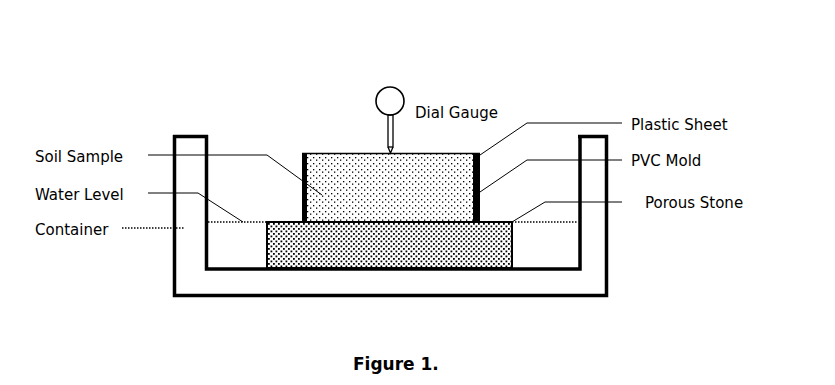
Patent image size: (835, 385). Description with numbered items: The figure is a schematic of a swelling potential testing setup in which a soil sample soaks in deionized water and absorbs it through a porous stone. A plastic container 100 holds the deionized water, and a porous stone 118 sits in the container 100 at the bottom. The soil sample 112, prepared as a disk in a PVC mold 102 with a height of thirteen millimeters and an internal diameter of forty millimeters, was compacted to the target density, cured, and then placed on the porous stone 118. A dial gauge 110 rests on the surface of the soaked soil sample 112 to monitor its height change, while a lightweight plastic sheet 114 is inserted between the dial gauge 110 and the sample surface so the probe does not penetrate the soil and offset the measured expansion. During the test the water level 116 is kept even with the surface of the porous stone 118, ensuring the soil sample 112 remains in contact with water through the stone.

The plastic container 100 is at (192, 263).
The PVC mold 102 is at (480, 175).
The dial gauge 110 is at (392, 88).
The soil sample 112 is at (322, 172).
The plastic sheet 114 is at (455, 153).
The water level 116 is at (250, 220).
The porous stone 118 is at (458, 250).